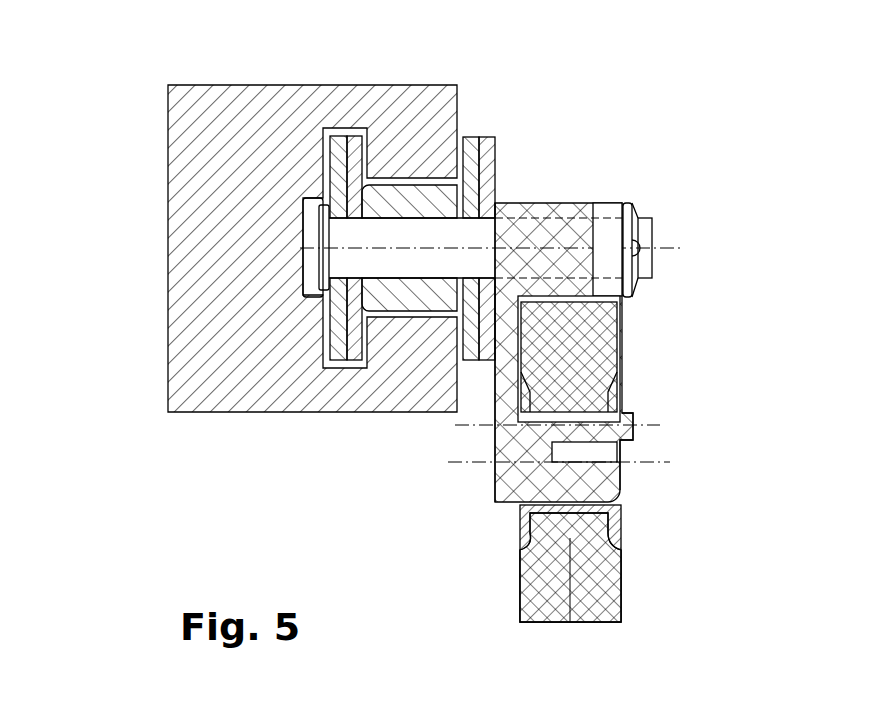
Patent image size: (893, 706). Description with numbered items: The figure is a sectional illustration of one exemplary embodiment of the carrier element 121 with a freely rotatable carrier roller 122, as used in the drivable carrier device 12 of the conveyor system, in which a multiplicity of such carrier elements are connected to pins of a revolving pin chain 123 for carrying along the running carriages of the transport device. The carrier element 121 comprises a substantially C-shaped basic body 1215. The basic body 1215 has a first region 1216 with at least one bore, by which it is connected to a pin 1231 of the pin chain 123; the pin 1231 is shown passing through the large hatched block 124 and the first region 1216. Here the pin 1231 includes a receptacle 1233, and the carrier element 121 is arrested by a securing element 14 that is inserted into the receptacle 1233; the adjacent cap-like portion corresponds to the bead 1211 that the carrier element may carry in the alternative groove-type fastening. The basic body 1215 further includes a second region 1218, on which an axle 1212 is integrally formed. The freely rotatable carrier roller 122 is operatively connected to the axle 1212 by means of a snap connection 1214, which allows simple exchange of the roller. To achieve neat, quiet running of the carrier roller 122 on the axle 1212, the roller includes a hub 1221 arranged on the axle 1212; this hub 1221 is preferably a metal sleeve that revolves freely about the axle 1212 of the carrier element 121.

The carrier device 12 is at (358, 210).
The mounting block 124 is at (221, 257).
The pin chain 123 is at (487, 120).
The pin 1231 is at (407, 248).
The carrier element 121 is at (557, 340).
The first region 1216 is at (520, 212).
The basic body 1215 is at (505, 425).
The axle 1212 is at (515, 462).
The second region 1218 is at (523, 488).
The snap connection 1214 is at (623, 473).
The hub 1221 is at (637, 423).
The freely rotatable carrier roller 122 is at (587, 360).
The bead 1211 is at (640, 228).
The securing element 14 is at (703, 203).
The receptacle 1233 is at (650, 258).